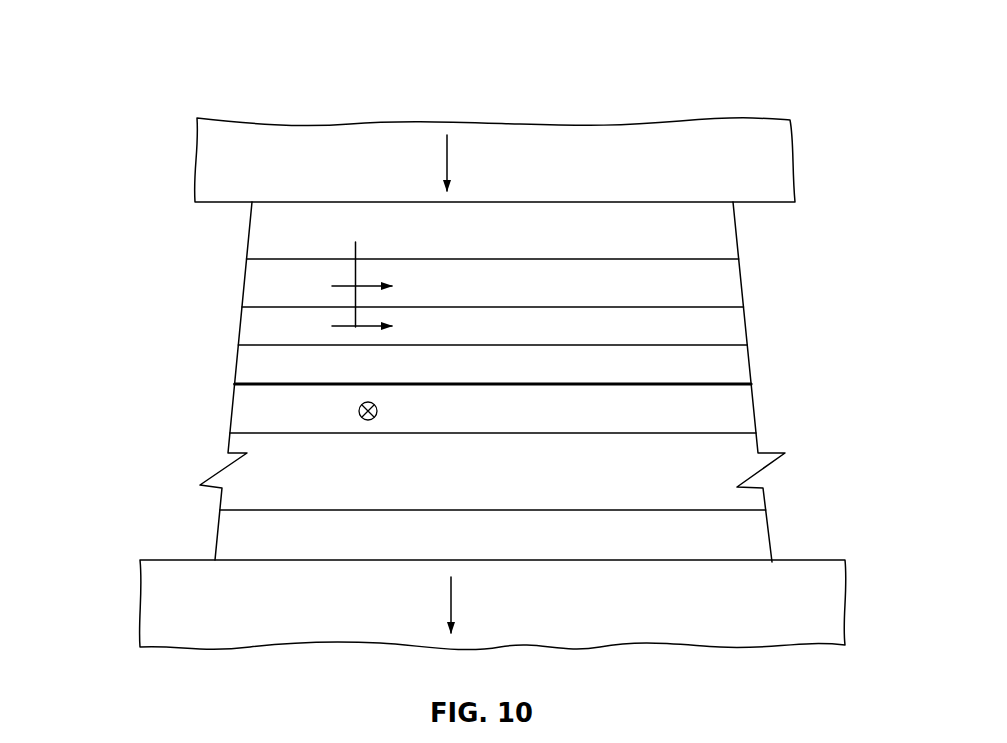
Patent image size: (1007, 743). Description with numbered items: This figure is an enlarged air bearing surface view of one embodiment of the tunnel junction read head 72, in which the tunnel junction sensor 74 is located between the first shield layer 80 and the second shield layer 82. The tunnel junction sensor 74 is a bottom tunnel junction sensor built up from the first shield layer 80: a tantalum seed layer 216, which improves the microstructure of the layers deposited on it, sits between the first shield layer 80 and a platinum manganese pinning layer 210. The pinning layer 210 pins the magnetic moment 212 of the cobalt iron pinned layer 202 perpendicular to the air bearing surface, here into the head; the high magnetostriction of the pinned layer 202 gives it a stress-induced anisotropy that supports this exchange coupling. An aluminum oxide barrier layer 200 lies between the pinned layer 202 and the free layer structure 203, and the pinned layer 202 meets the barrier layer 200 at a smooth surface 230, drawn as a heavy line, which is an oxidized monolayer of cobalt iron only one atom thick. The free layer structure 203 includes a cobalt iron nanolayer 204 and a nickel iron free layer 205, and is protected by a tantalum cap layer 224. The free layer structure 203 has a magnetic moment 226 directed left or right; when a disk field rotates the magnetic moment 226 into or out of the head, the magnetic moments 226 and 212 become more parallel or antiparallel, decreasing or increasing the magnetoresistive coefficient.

The tunnel junction read head 72 is at (632, 93).
The second shield layer 82 is at (780, 147).
The first shield layer 80 is at (806, 636).
The tunnel junction sensor 74 is at (180, 202).
The free layer structure 203 is at (230, 343).
The cap layer 224 is at (738, 235).
The free layer 205 is at (742, 287).
The nanolayer 204 is at (745, 323).
The magnetic moment of free layer structure 226 is at (353, 242).
The barrier layer 200 is at (748, 362).
The smooth surface 230 is at (268, 384).
The pinned layer 202 is at (755, 407).
The magnetic moment of pinned layer 212 is at (359, 411).
The pinning layer 210 is at (765, 500).
The seed layer 216 is at (768, 536).